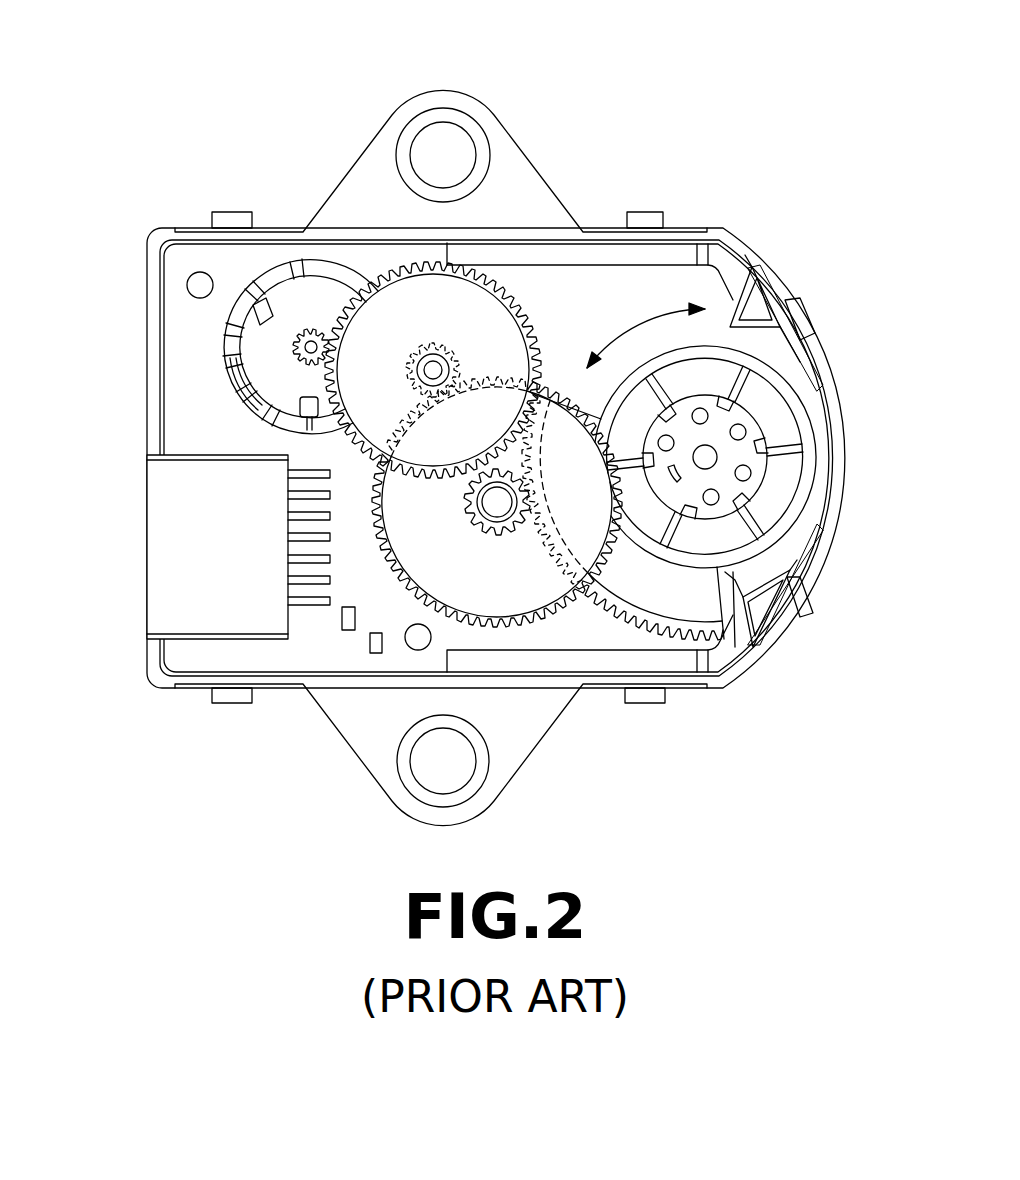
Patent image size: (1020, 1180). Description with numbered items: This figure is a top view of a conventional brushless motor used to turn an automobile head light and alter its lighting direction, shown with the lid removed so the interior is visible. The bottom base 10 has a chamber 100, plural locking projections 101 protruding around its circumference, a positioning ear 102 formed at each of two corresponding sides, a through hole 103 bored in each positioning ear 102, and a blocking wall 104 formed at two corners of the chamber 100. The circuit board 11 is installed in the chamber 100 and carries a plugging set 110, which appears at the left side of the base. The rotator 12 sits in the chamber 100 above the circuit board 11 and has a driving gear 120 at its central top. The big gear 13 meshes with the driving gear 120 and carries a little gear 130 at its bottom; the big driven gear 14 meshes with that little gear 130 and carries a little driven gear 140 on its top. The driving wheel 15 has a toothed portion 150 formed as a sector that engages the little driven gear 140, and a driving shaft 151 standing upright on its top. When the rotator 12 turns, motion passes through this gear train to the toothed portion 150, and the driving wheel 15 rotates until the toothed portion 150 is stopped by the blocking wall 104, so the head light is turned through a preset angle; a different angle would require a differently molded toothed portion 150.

The bottom base 10 is at (158, 229).
The circuit board 11 is at (313, 652).
The rotator 12 is at (273, 300).
The big gear 13 is at (500, 345).
The big driven gear 14 is at (537, 580).
The driving wheel 15 is at (783, 488).
The chamber 100 is at (607, 297).
The locking projections 101 is at (648, 212).
The positioning ear 102 is at (424, 104).
The through hole 103 is at (458, 138).
The blocking wall 104 is at (727, 292).
The plugging set 110 is at (197, 549).
The driving gear 120 is at (312, 333).
The little gear 130 is at (443, 348).
The little driven gear 140 is at (497, 535).
The toothed portion 150 is at (670, 597).
The driving shaft 151 is at (753, 427).